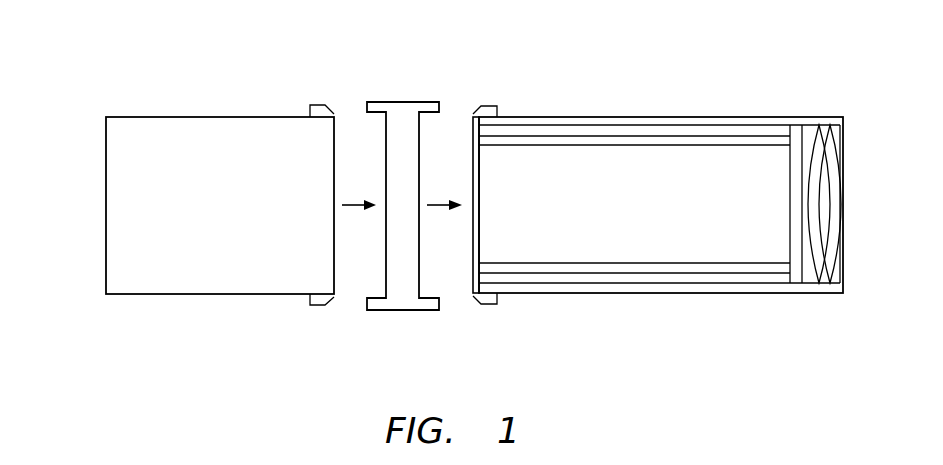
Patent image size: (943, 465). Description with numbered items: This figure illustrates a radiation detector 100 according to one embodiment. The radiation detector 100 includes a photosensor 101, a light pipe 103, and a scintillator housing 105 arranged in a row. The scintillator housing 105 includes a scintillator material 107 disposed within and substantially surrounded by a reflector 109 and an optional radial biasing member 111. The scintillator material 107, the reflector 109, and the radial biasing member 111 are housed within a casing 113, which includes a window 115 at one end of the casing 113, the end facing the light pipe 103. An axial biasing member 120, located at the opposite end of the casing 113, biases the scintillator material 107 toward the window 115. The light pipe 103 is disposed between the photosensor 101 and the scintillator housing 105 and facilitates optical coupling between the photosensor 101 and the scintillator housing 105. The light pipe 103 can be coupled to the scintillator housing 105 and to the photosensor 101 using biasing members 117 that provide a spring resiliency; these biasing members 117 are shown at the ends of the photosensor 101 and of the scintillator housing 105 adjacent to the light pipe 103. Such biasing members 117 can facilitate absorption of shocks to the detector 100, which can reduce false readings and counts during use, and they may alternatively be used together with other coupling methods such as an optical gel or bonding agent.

The radiation detector 100 is at (112, 54).
The photosensor 101 is at (172, 297).
The light pipe 103 is at (398, 312).
The scintillator housing 105 is at (705, 328).
The scintillator material 107 is at (640, 217).
The reflector 109 is at (731, 141).
The radial biasing member 111 is at (636, 131).
The casing 113 is at (563, 117).
The window 115 is at (470, 128).
The biasing members 117 is at (320, 104).
The axial biasing member 120 is at (810, 275).